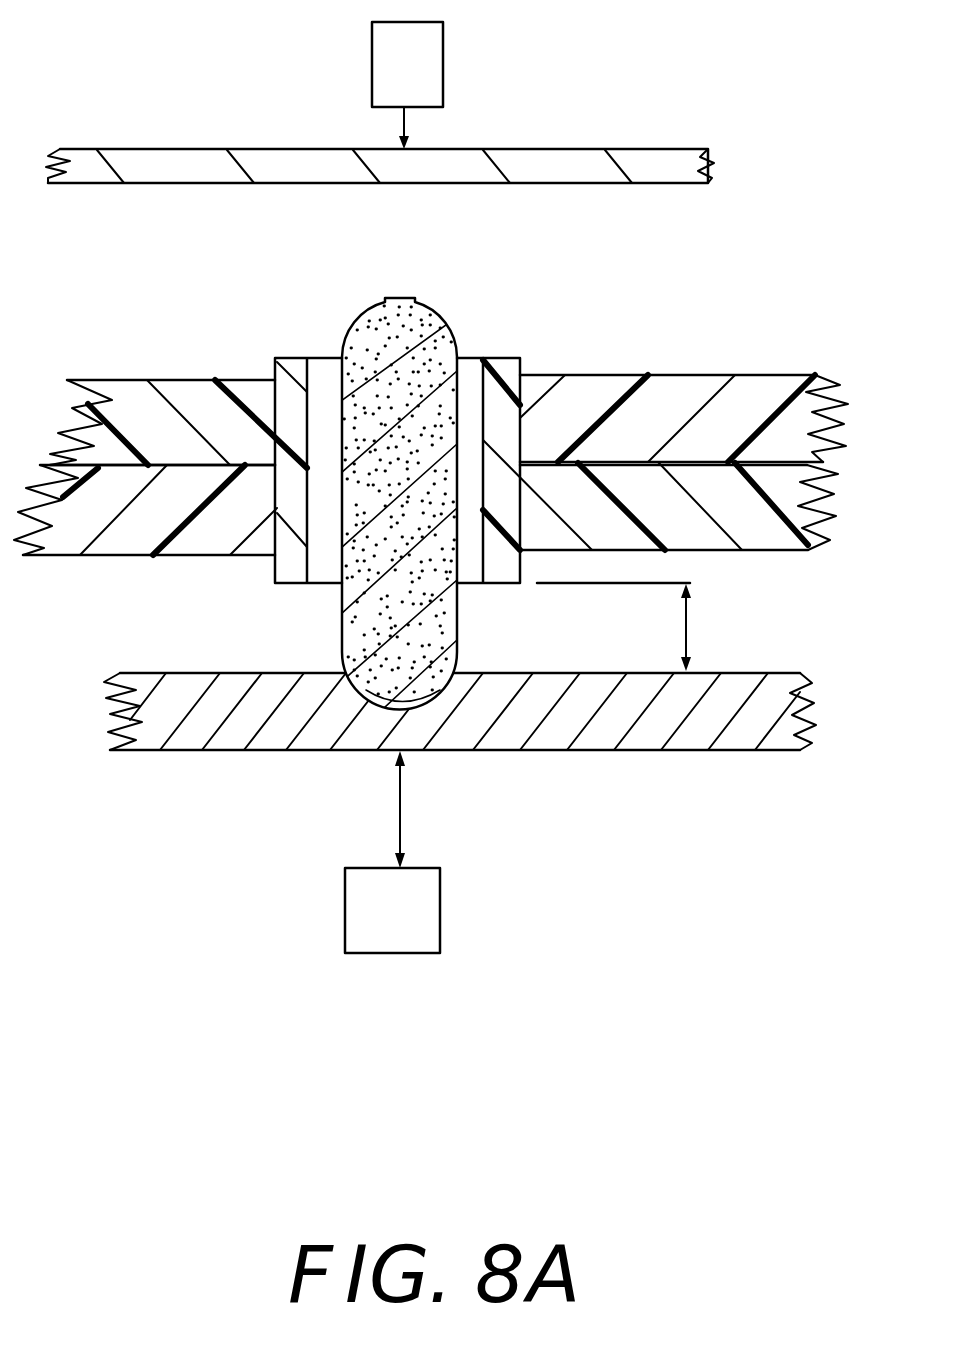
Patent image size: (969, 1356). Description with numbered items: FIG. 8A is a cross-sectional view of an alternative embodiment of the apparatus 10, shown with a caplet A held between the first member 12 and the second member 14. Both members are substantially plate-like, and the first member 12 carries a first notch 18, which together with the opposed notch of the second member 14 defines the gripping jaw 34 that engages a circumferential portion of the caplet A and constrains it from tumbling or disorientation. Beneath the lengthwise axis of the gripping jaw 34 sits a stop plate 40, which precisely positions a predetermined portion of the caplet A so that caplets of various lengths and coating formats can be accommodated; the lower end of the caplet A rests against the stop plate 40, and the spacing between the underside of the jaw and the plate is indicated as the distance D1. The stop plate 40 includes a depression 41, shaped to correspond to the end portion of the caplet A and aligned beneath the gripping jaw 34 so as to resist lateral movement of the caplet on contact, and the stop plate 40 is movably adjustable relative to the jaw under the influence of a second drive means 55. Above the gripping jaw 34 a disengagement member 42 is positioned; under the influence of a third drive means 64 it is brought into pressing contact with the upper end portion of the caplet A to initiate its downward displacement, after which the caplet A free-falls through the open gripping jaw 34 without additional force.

The apparatus 10 is at (712, 305).
The first member 12 is at (140, 380).
The second member 14 is at (117, 555).
The first notch 18 is at (313, 357).
The gripping jaw 34 is at (485, 287).
The stop plate 40 is at (583, 750).
The depression 41 is at (247, 750).
The disengagement member 42 is at (553, 148).
The second drive means 55 is at (441, 904).
The third drive means 64 is at (444, 60).
The caplet A is at (458, 620).
The distance D1 is at (686, 620).